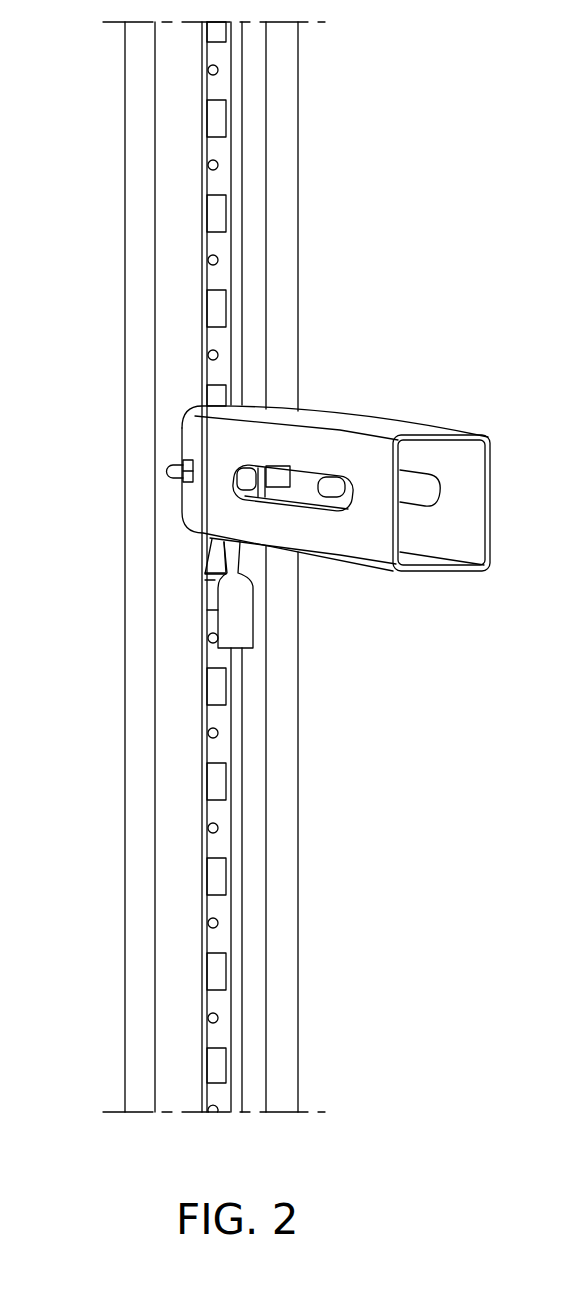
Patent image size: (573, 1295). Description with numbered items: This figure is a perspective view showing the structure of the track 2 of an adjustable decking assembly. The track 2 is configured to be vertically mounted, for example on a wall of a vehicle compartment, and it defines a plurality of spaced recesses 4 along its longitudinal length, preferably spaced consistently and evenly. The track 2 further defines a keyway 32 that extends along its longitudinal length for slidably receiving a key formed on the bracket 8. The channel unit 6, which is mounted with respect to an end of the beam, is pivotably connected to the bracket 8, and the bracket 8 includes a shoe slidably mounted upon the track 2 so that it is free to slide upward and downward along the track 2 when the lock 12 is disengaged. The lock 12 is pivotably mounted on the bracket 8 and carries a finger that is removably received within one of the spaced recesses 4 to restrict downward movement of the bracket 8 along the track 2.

The track 2 is at (213, 184).
The spaced recesses 4 is at (218, 309).
The keyway 32 is at (235, 82).
The channel unit 6 is at (330, 455).
The bracket 8 is at (208, 557).
The lock 12 is at (218, 596).